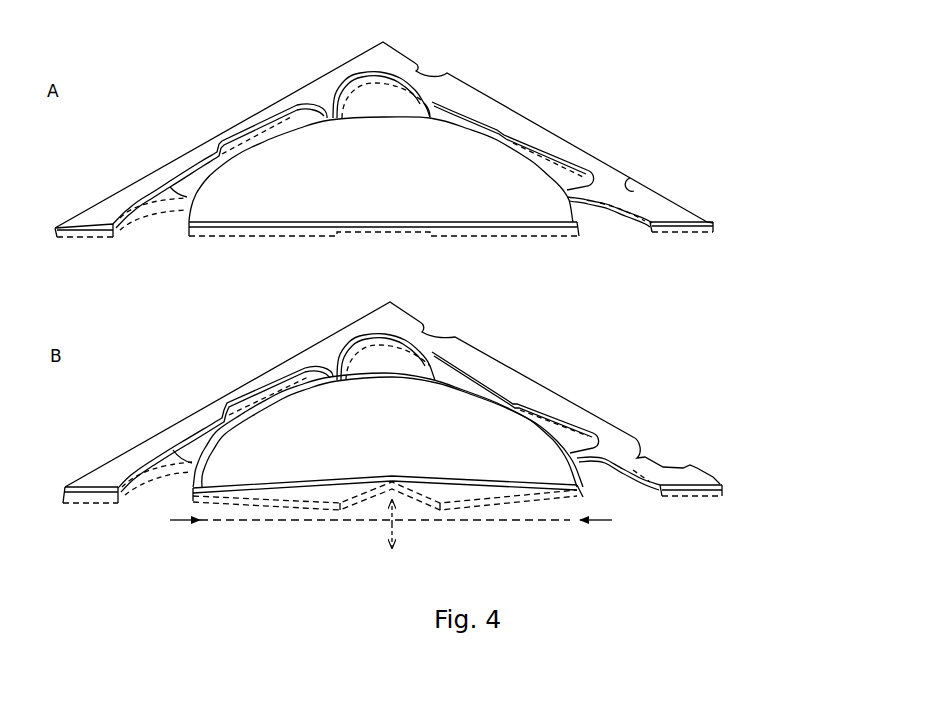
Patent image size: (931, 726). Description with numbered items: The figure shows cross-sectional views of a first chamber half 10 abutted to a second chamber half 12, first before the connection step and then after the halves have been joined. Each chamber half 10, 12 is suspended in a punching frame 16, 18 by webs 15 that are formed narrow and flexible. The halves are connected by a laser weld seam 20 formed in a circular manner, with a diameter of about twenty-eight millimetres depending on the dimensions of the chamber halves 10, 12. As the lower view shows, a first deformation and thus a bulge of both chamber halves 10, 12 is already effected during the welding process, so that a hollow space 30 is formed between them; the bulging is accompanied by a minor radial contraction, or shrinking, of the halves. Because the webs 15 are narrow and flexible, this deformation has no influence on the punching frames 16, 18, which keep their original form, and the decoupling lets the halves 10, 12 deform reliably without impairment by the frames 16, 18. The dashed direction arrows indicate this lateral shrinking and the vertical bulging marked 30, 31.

In FIG. 4A, the first chamber half 10 is at (577, 205).
In FIG. 4A, the second chamber half 12 is at (593, 226).
In FIG. 4A, the webs 15 is at (440, 108).
In FIG. 4B, the punching frame 16 is at (703, 467).
In FIG. 4B, the punching frame 18 is at (733, 482).
In FIG. 4B, the laser weld seam 20 is at (512, 405).
In FIG. 4B, the hollow space 30 is at (630, 520).
In FIG. 4B, the vertical movement direction 31 is at (630, 520).